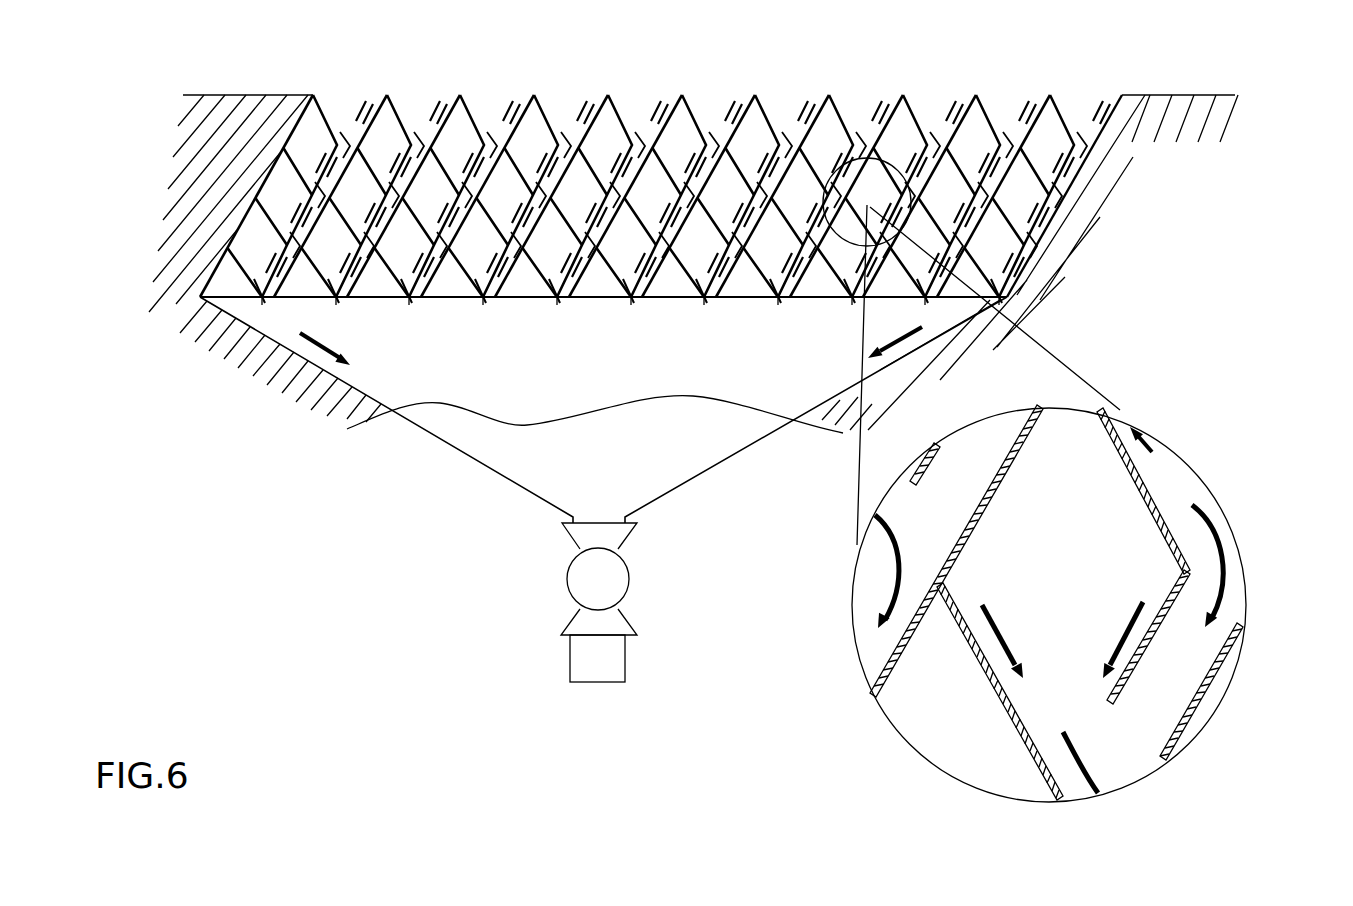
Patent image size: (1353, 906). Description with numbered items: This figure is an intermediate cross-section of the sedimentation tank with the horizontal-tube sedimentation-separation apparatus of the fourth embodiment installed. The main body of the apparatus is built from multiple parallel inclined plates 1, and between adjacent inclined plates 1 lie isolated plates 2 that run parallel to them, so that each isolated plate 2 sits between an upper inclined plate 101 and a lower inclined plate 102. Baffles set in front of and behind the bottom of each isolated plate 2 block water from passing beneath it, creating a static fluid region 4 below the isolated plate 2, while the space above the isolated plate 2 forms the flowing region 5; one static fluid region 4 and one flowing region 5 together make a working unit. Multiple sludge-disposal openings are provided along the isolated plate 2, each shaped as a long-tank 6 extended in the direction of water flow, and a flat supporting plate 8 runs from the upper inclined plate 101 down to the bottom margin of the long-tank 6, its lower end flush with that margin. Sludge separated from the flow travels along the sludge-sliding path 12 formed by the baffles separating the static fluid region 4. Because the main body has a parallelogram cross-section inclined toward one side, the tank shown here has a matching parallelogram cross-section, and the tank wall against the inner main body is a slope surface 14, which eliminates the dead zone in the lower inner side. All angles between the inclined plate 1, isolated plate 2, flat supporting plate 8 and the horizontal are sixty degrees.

The inclined plate 1 is at (460, 97).
The static fluid region 4 is at (505, 105).
The sludge-sliding path formed by baffles separating the static fluid region 12 is at (640, 105).
The flat supporting plate 8 is at (852, 170).
The flowing region 5 is at (968, 130).
The slope surface 14 is at (1100, 135).
The isolated plate 2 is at (1178, 555).
The upper inclined plate 101 is at (903, 652).
The lower inclined plate 102 is at (1340, 757).
The long-tank 6 is at (1095, 727).